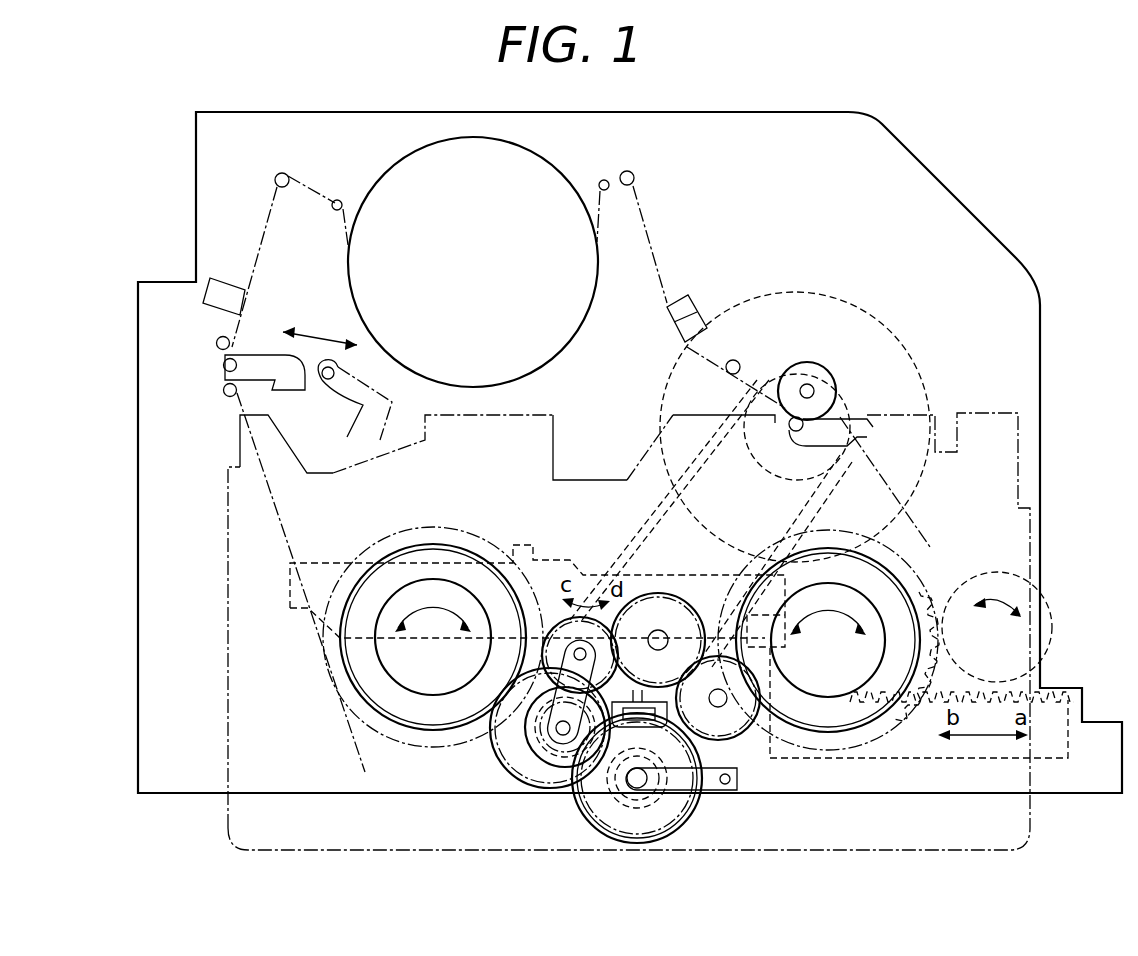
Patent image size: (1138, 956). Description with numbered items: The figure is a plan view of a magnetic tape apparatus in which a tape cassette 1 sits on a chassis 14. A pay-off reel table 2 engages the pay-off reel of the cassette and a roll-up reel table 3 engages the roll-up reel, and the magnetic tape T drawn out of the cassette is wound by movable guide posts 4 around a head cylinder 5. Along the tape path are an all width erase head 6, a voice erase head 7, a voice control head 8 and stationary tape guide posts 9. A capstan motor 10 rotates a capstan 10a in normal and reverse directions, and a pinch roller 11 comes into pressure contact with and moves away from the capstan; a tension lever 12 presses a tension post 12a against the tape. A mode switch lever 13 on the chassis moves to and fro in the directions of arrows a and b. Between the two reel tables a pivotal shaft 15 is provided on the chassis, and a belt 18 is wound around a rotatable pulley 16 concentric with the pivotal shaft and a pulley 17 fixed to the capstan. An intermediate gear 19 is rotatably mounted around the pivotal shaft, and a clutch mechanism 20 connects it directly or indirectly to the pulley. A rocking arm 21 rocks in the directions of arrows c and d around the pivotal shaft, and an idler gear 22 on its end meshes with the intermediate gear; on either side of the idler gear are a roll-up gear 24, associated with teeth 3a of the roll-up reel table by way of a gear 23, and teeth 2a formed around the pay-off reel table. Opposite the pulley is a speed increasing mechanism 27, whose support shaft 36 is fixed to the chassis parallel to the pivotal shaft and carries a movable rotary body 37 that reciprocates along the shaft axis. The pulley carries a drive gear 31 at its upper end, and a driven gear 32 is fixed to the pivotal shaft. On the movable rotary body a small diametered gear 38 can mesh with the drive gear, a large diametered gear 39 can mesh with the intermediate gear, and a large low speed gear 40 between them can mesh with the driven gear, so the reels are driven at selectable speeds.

The tape cassette 1 is at (548, 412).
The pay-off reel table 2 is at (418, 580).
The teeth 2a is at (470, 543).
The roll-up reel table 3 is at (860, 595).
The teeth 3a is at (905, 585).
The movable guide posts 4 is at (337, 199).
The head cylinder 5 is at (418, 160).
The all width erase head 6 is at (224, 287).
The voice erase head 7 is at (690, 296).
The voice control head 8 is at (705, 318).
The stationary tape guide posts 9 is at (218, 351).
The capstan motor 10 is at (876, 305).
The capstan 10a is at (780, 448).
The pinch roller 11 is at (836, 388).
The tension lever 12 is at (290, 392).
The tension post 12a is at (247, 354).
The mode switch lever 13 is at (585, 555).
The chassis 14 is at (1038, 324).
The pivotal shaft 15 is at (530, 742).
The pulley 16 is at (487, 730).
The pulley 17 is at (848, 430).
The belt 18 is at (620, 537).
The intermediate gear 19 is at (495, 718).
The clutch mechanism 20 is at (658, 688).
The rocking arm 21 is at (646, 630).
The idler gear 22 is at (490, 658).
The gear 23 is at (762, 712).
The roll-up gear 24 is at (663, 592).
The speed increasing mechanism 27 is at (712, 755).
The drive gear 31 is at (535, 758).
The driven gear 32 is at (523, 778).
The support shaft 36 is at (636, 790).
The movable rotary body 37 is at (712, 806).
The small diametered gear 38 is at (597, 797).
The large diametered gear 39 is at (595, 828).
The large low speed gear 40 is at (683, 836).
The magnetic tape T is at (640, 193).